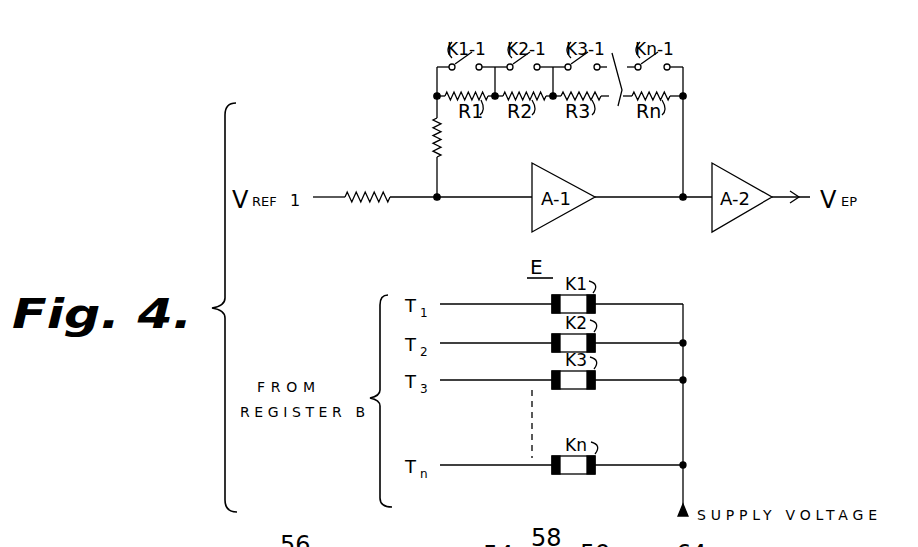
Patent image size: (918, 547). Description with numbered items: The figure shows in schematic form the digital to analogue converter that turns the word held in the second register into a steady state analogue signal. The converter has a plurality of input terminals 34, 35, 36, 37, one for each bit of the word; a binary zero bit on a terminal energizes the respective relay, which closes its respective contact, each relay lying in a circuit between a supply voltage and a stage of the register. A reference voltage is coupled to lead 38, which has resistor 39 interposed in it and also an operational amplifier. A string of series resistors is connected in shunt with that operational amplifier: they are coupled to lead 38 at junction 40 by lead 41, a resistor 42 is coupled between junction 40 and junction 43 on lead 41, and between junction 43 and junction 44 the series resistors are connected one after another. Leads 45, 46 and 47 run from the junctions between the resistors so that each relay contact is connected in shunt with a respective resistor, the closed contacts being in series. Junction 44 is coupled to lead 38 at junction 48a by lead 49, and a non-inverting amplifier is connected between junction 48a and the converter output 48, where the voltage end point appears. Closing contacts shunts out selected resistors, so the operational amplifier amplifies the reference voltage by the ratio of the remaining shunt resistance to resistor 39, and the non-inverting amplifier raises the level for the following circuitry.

The input terminal 34 is at (471, 304).
The input terminal 35 is at (475, 343).
The input terminal 36 is at (475, 380).
The input terminal 37 is at (465, 465).
The lead 38 is at (326, 199).
The resistor 39 is at (370, 204).
The junction 40 is at (438, 197).
The lead 41 is at (436, 176).
The resistor 42 is at (436, 140).
The junction 43 is at (436, 96).
The junction 44 is at (685, 95).
The lead 45 is at (496, 70).
The lead 46 is at (555, 70).
The lead 47 is at (684, 70).
The output 48 is at (803, 196).
The junction 48a is at (683, 200).
The lead 49 is at (684, 148).